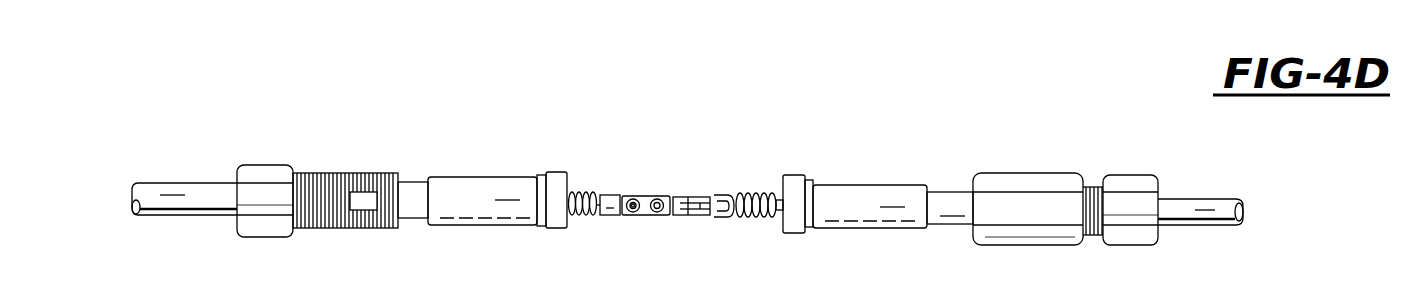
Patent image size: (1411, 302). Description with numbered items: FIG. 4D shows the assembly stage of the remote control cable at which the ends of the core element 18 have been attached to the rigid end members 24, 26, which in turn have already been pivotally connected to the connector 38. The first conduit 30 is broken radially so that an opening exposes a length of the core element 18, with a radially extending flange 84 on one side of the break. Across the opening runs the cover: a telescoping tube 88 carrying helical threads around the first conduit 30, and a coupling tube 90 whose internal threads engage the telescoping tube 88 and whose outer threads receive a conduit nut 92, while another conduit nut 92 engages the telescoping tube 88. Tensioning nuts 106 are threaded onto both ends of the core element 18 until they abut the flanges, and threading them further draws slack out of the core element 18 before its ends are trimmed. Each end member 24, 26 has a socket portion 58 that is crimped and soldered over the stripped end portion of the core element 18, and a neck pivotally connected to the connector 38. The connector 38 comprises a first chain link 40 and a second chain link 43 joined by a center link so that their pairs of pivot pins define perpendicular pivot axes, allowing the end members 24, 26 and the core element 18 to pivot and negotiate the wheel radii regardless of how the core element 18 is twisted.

The first conduit 30 is at (135, 207).
The conduit nut 92 is at (271, 165).
The telescoping tube 88 is at (330, 175).
The second radially extending flange 84 is at (537, 175).
The tensioning nut 106 is at (562, 172).
The flexible motion transmitting core element 18 is at (580, 189).
The first rigid end member 24 is at (603, 223).
The connector 38 is at (603, 193).
The first chain link 40 is at (635, 193).
The second chain link 43 is at (690, 195).
The socket portion 58 is at (718, 195).
The second rigid end member 26 is at (723, 221).
The coupling tube 90 is at (1038, 173).